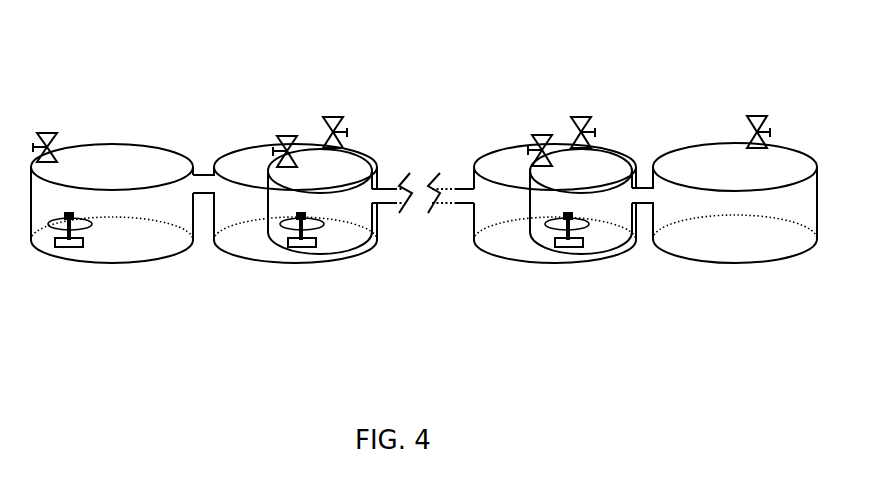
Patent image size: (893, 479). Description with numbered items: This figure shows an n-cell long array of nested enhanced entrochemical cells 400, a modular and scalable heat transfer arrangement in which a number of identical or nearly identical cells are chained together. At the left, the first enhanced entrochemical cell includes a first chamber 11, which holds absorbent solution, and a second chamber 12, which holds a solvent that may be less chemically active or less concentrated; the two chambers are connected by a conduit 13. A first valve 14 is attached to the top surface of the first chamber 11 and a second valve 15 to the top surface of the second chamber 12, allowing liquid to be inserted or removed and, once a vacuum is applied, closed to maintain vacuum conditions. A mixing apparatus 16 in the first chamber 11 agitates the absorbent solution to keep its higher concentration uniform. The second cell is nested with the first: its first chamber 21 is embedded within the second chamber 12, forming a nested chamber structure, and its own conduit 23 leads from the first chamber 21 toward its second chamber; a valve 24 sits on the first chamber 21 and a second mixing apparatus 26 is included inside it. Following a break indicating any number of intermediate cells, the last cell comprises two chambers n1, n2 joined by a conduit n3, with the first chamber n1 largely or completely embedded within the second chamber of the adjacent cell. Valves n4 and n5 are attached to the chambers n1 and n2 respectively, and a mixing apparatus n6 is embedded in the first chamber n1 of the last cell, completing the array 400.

The first chamber 11 is at (113, 242).
The second chamber 12 is at (250, 240).
The conduit 13 is at (202, 170).
The first valve 14 is at (52, 132).
The second valve 15 is at (333, 115).
The mixing apparatus 16 is at (67, 247).
The first chamber of second cell 21 is at (338, 238).
The conduit 23 is at (382, 185).
The valve 24 is at (285, 134).
The second mixing apparatus 26 is at (295, 248).
The Chamber 1 of cell n n1 is at (603, 237).
The Chamber 2 of cell n n2 is at (751, 233).
The conduit n3 is at (646, 185).
The valve n4 is at (540, 133).
The valve n5 is at (753, 115).
The mixing apparatus n6 is at (563, 247).
The n-cell long array of nested enhanced entrochemical cells 400 is at (408, 378).